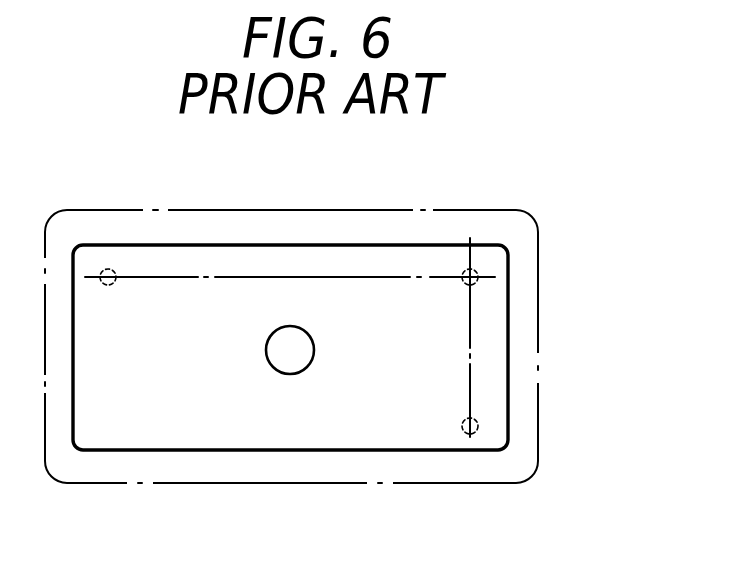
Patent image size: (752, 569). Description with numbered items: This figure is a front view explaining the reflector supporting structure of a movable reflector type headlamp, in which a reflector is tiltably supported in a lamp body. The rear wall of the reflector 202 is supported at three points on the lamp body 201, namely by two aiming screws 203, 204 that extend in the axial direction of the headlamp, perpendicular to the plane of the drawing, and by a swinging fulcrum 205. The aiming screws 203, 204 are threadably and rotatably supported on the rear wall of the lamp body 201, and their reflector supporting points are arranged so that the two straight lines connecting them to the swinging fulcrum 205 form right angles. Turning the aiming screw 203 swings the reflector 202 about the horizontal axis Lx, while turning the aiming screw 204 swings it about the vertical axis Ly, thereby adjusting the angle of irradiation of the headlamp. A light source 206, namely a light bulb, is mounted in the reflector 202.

The lamp body 201 is at (538, 282).
The reflector 202 is at (120, 451).
The aiming screw 203 is at (109, 268).
The aiming screw 204 is at (477, 436).
The swinging fulcrum 205 is at (473, 268).
The light source 206 is at (293, 374).
The horizontal axis Lx is at (317, 276).
The vertical axis Ly is at (470, 382).